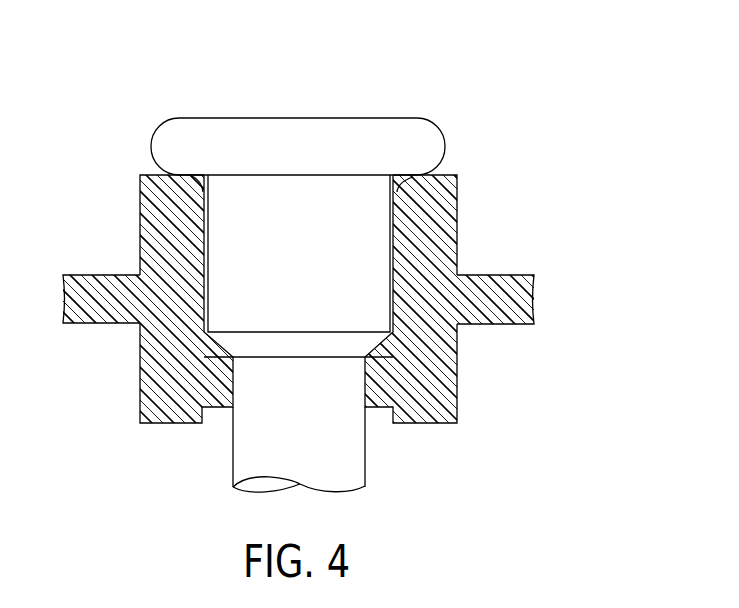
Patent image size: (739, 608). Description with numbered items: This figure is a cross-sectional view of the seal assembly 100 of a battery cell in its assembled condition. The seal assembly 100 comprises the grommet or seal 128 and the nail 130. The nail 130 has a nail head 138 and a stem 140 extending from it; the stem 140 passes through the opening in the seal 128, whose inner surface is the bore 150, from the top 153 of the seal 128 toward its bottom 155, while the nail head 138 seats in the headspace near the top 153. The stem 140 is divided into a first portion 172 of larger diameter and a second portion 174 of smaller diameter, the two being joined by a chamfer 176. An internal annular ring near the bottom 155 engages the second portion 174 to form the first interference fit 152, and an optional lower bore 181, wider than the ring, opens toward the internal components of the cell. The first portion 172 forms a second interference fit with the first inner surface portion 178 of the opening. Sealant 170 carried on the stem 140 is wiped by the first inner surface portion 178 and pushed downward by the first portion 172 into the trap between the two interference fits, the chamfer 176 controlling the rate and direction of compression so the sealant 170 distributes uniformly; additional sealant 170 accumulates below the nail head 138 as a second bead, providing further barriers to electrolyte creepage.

The seal assembly 100 is at (514, 89).
The grommet 128 is at (93, 315).
The nail 130 is at (348, 193).
The nail head 138 is at (200, 135).
The stem 140 is at (375, 193).
The bore 150 is at (395, 223).
The first interference fit 152 is at (230, 378).
The top 153 is at (150, 173).
The bottom 155 is at (433, 425).
The sealant 170 is at (402, 187).
The first portion 172 is at (372, 264).
The second portion 174 is at (353, 458).
The chamfer 176 is at (393, 335).
The first inner surface portion 178 is at (204, 248).
The lower bore 181 is at (199, 424).